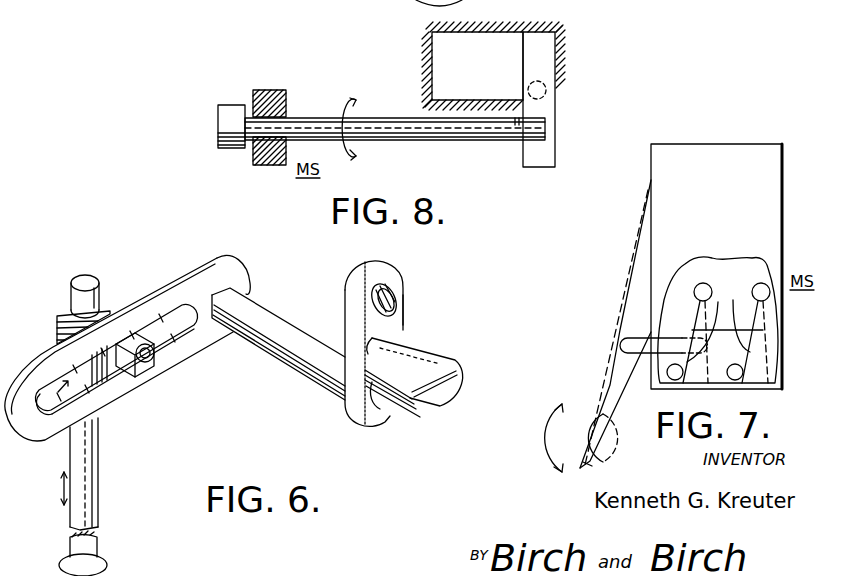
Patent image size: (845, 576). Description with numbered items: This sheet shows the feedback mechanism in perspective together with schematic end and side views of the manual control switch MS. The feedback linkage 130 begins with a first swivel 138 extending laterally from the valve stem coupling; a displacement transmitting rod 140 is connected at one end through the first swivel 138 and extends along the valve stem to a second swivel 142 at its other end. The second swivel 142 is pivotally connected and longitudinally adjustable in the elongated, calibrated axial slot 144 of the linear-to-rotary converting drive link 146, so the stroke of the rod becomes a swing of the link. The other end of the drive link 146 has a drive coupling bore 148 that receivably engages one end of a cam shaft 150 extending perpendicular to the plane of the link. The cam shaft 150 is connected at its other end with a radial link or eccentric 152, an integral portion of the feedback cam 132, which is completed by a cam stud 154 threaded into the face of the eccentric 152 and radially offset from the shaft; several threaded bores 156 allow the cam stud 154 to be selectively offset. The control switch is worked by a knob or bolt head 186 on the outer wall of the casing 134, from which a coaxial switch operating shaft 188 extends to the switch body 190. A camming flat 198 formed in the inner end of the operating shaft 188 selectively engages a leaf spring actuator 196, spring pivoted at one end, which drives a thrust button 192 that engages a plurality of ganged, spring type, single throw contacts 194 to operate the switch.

In FIG. 6, the feedback linkage 130 is at (135, 271).
In FIG. 6, the feedback cam 132 is at (410, 310).
In FIG. 8, the casing 134 is at (255, 160).
In FIG. 6, the first swivel 138 is at (108, 559).
In FIG. 6, the displacement transmitting rod 140 is at (86, 459).
In FIG. 6, the second swivel 142 is at (63, 314).
In FIG. 6, the calibrated axial slot 144 is at (100, 409).
In FIG. 6, the linear-to-rotary converting drive link 146 is at (60, 349).
In FIG. 6, the drive coupling bore 148 is at (221, 263).
In FIG. 6, the cam shaft 150 is at (282, 340).
In FIG. 6, the eccentric 152 is at (364, 281).
In FIG. 6, the cam stud 154 is at (420, 350).
In FIG. 6, the threaded bores 156 is at (396, 290).
In FIG. 8, the knob or bolt head 186 is at (231, 106).
In FIG. 8, the switch operating shaft 188 is at (386, 139).
In FIG. 7, the switch operating shaft 188 is at (576, 469).
In FIG. 8, the switch body 190 is at (495, 78).
In FIG. 8, the thrust button 192 is at (547, 91).
In FIG. 7, the thrust button 192 is at (665, 345).
In FIG. 7, the ganged single throw contacts 194 is at (729, 341).
In FIG. 8, the leaf spring actuator 196 is at (544, 146).
In FIG. 7, the leaf spring actuator 196 is at (614, 378).
In FIG. 8, the camming flat 198 is at (514, 143).
In FIG. 7, the camming flat 198 is at (592, 467).